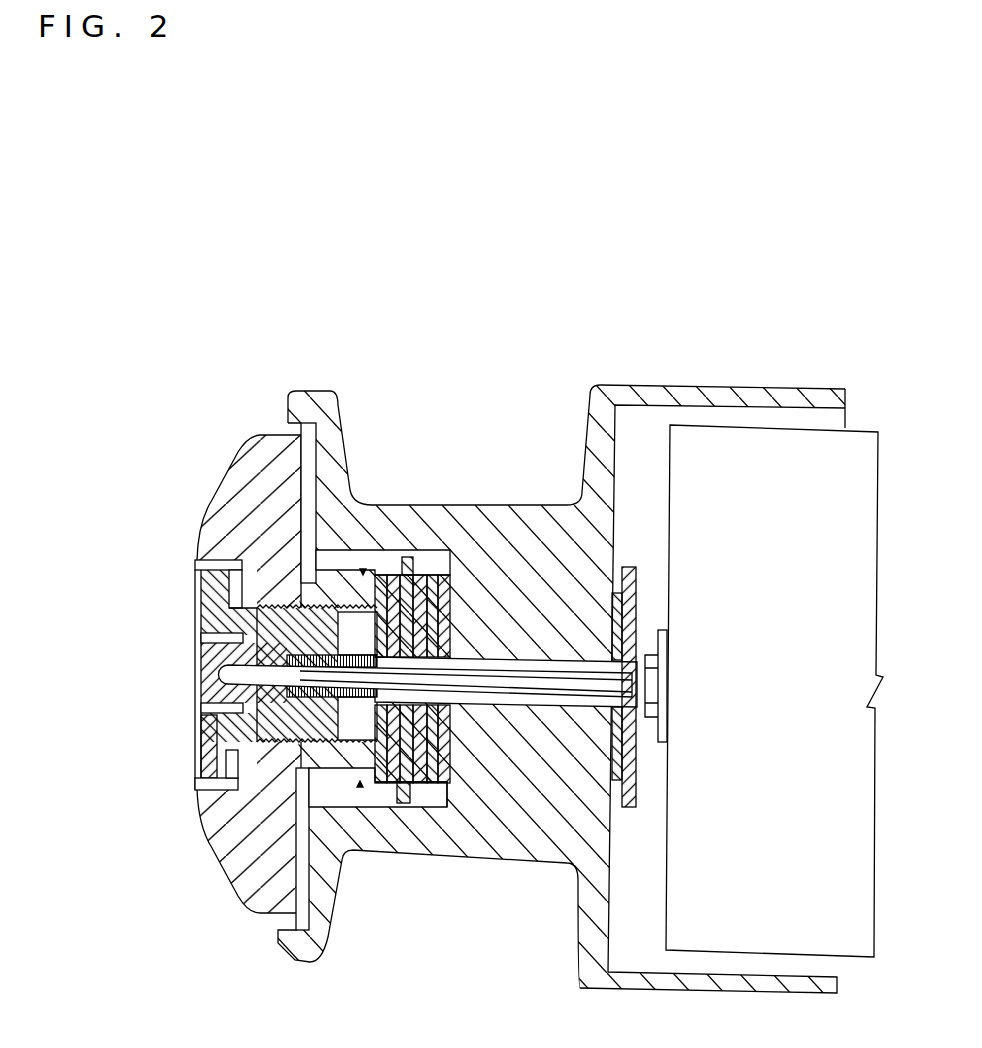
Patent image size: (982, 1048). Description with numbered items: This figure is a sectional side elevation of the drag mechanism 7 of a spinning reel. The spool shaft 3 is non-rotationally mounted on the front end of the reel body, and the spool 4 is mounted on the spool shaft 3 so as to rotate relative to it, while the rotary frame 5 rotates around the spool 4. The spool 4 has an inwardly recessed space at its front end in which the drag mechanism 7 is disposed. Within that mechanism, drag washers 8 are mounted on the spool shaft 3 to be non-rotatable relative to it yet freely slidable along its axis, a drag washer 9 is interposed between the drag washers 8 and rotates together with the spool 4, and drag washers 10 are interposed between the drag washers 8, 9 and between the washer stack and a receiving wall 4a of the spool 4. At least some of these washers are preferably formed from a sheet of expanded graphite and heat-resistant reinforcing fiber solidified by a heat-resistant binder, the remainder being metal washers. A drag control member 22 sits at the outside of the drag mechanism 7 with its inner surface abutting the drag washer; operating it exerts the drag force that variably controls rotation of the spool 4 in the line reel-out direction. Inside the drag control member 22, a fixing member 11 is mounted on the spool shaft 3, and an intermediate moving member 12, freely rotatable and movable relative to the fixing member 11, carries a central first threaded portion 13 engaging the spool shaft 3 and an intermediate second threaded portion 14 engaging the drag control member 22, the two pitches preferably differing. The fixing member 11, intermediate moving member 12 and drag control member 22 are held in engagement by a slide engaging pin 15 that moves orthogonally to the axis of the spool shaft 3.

The spool shaft 3 is at (530, 657).
The spool 4 is at (508, 858).
The receiving wall 4a is at (440, 793).
The rotary frame 5 is at (857, 960).
The drag mechanism 7 is at (212, 428).
The drag washers 8 is at (382, 575).
The drag washer 9 is at (406, 557).
The drag washers 10 is at (392, 575).
The fixing member 11 is at (232, 676).
The intermediate moving member 12 is at (212, 598).
The first threaded portion 13 is at (250, 641).
The second threaded portion 14 is at (262, 785).
The slide engaging pin 15 is at (200, 762).
The drag control member 22 is at (236, 862).